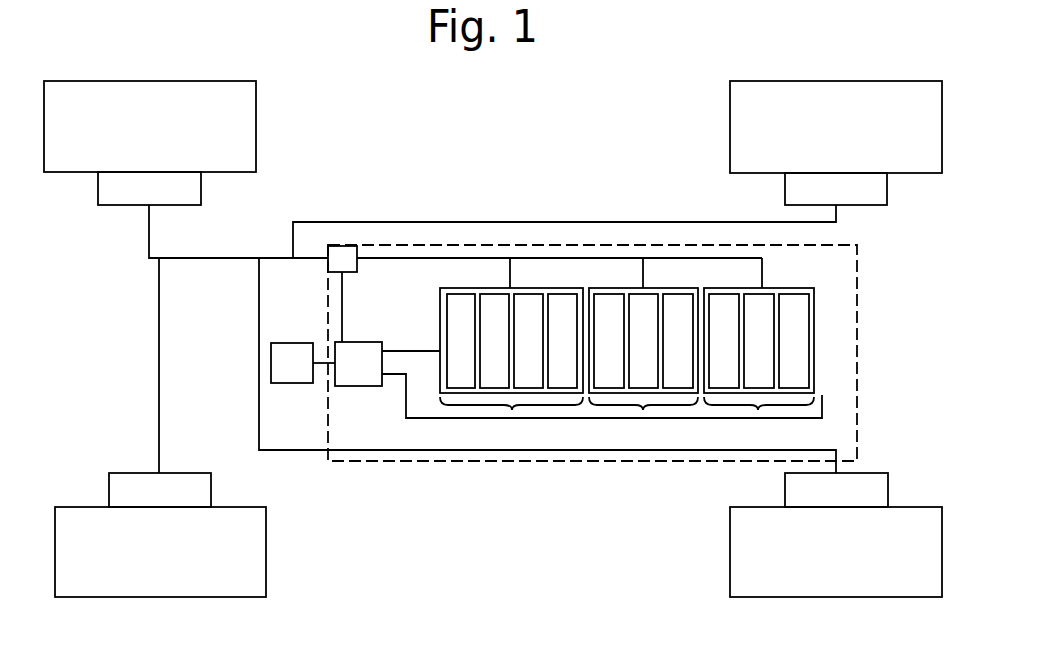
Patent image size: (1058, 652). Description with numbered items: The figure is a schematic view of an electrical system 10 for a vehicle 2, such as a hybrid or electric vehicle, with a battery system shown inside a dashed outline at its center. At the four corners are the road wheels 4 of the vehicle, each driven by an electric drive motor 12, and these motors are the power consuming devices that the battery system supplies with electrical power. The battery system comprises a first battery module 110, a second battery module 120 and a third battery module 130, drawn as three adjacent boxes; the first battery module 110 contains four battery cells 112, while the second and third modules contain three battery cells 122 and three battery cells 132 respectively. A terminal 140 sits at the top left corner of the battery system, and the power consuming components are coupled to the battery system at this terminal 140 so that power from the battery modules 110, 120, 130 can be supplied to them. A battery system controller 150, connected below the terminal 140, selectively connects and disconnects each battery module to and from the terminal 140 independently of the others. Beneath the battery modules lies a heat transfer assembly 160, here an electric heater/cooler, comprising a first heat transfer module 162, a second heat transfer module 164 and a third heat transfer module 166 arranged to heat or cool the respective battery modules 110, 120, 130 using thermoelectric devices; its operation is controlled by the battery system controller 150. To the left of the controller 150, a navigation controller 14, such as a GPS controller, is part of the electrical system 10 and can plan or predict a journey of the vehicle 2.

The vehicle 2 is at (618, 72).
The road wheels 4 is at (95, 80).
The electrical system 10 is at (494, 182).
The electric drive motors 12 is at (107, 206).
The navigation controller 14 is at (281, 367).
The first battery module 110 is at (530, 290).
The battery cells 112 is at (462, 303).
The second battery module 120 is at (623, 290).
The battery cells 122 is at (676, 303).
The third battery module 130 is at (814, 313).
The battery cells 132 is at (795, 362).
The terminal 140 is at (343, 246).
The battery system controller 150 is at (358, 342).
The heat transfer assembly 160 is at (537, 445).
The first heat transfer module 162 is at (512, 408).
The second heat transfer module 164 is at (643, 408).
The third heat transfer module 166 is at (758, 409).